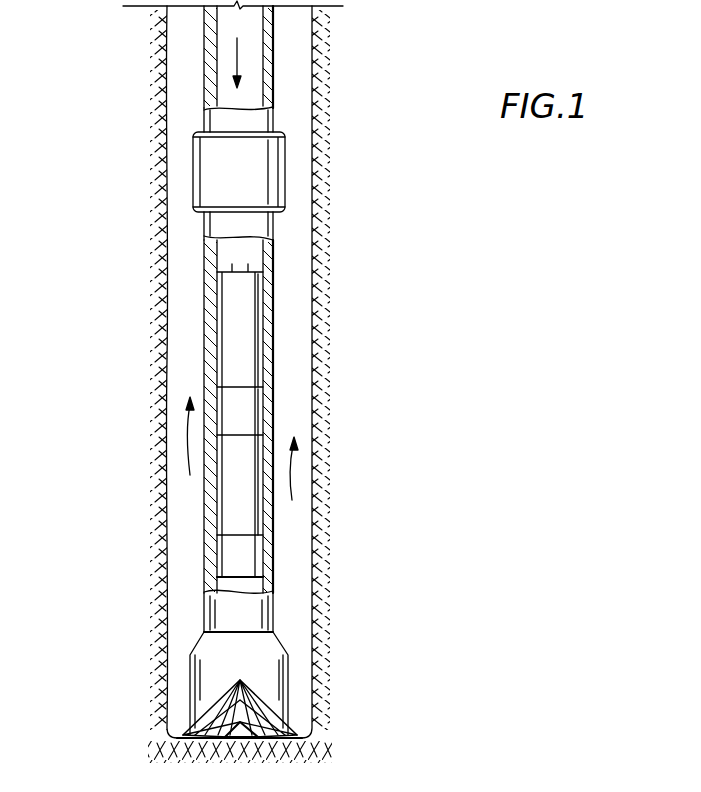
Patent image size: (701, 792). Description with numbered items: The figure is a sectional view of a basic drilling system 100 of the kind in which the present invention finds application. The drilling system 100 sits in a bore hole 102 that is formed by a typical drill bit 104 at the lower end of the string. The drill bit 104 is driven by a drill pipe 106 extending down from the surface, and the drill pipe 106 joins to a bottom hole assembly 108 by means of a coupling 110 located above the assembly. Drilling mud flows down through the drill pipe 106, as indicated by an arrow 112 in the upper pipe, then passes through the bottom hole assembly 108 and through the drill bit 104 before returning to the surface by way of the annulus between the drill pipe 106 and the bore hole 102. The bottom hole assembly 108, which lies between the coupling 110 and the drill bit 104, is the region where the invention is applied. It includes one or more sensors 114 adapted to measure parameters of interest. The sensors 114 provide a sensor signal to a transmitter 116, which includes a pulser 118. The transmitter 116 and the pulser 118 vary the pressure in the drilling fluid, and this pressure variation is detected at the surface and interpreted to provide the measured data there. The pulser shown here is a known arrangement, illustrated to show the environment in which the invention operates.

The drilling system 100 is at (192, 560).
The bore hole 102 is at (164, 330).
The drill bit 104 is at (202, 715).
The drill pipe 106 is at (205, 78).
The bottom hole assembly 108 is at (356, 417).
The coupling 110 is at (270, 180).
The arrow 112 is at (240, 62).
The sensors 114 is at (305, 556).
The transmitter 116 is at (252, 318).
The pulser 118 is at (255, 410).